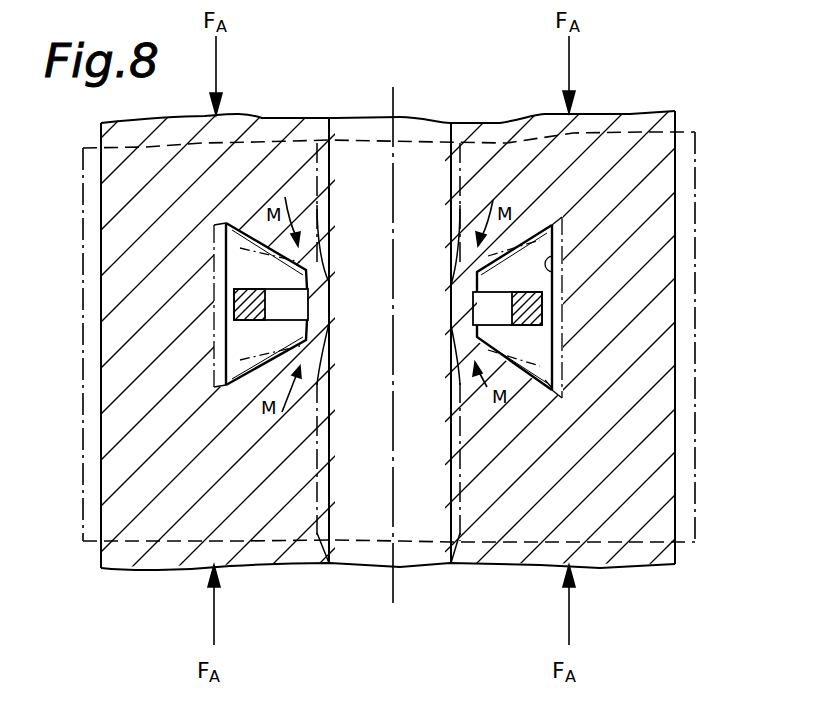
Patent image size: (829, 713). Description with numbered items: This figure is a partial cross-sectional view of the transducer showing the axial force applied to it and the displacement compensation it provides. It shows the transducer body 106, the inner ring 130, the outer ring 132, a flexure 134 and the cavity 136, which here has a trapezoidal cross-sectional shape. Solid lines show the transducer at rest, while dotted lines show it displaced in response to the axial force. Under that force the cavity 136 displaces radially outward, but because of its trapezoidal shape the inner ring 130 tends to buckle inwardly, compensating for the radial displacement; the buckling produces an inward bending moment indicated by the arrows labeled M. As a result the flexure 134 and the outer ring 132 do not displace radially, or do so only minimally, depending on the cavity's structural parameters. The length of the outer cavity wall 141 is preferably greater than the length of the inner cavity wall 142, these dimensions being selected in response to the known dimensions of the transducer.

The transducer body 106 is at (640, 458).
The inner ring 130 is at (452, 290).
The outer ring 132 is at (530, 305).
The flexure 134 is at (505, 300).
The cavity 136 is at (537, 350).
The outer cavity wall 141 is at (553, 272).
The inner cavity wall 142 is at (552, 380).